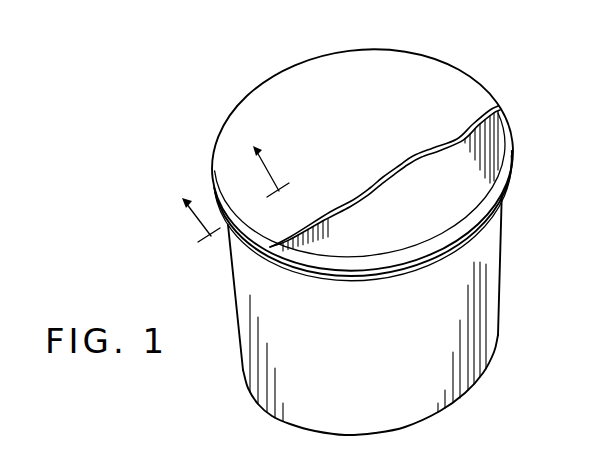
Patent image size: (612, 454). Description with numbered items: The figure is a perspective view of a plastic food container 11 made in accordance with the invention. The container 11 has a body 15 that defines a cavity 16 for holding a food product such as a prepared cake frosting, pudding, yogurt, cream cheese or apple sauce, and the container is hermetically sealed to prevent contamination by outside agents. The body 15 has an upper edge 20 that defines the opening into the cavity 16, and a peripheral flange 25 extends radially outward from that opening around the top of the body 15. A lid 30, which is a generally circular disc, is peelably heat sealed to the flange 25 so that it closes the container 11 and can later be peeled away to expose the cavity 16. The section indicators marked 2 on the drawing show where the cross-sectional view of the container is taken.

The plastic food container 11 is at (530, 62).
The body 15 is at (498, 310).
The cavity 16 is at (398, 176).
The upper edge 20 is at (513, 149).
The peripheral flange 25 is at (497, 214).
The lid 30 is at (394, 49).
The section line 2- 2 is at (227, 185).